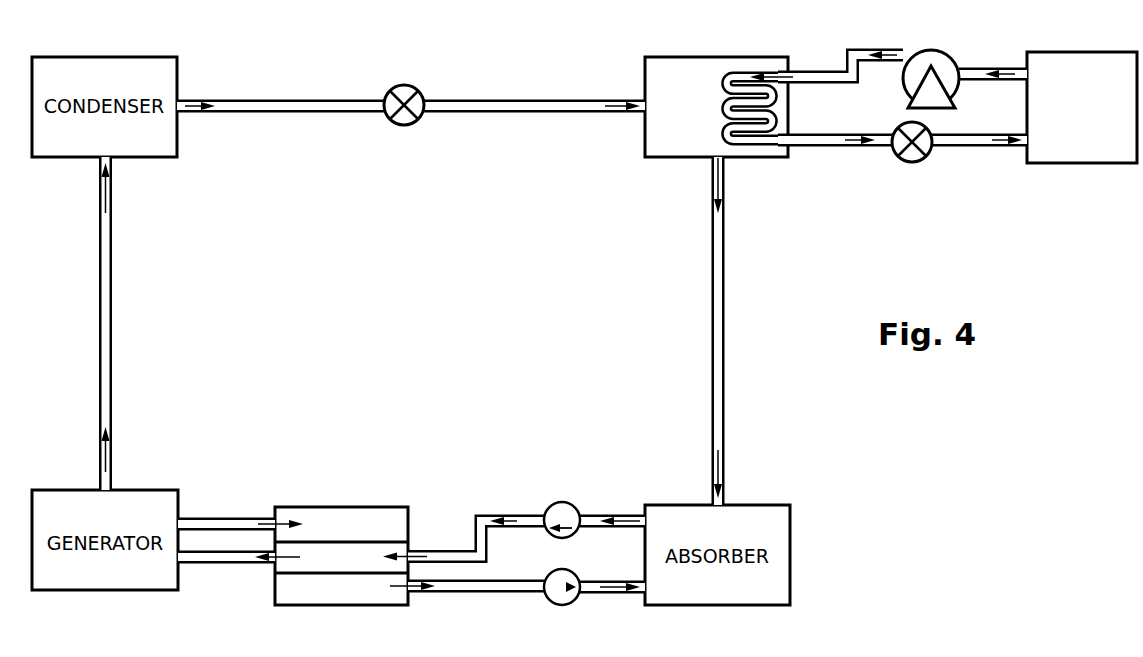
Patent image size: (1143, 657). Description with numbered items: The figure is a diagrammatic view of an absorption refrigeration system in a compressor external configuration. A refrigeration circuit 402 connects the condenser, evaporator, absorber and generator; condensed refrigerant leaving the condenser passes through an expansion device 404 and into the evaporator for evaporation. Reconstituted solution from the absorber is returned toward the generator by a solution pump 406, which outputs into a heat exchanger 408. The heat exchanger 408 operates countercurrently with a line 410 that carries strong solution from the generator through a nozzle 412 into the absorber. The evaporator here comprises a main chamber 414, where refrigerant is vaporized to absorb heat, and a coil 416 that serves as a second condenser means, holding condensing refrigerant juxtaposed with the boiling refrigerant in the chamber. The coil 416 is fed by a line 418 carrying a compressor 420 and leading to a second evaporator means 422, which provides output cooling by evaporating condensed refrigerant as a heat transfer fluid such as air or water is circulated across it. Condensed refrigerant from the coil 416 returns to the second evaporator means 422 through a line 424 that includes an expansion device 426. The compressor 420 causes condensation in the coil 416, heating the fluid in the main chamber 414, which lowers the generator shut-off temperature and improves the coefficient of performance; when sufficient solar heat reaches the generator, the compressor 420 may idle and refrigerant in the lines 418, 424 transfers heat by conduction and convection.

The refrigeration circuit 402 is at (282, 100).
The expansion device 404 is at (424, 93).
The solution pump 406 is at (570, 503).
The heat exchanger 408 is at (341, 507).
The line 410 is at (223, 520).
The nozzle 412 is at (575, 605).
The main chamber 414 is at (691, 119).
The coil 416 is at (735, 142).
The line 418 is at (849, 49).
The compressor 420 is at (946, 56).
The second evaporator means 422 is at (1070, 58).
The line 424 is at (823, 147).
The expansion device 426 is at (928, 157).